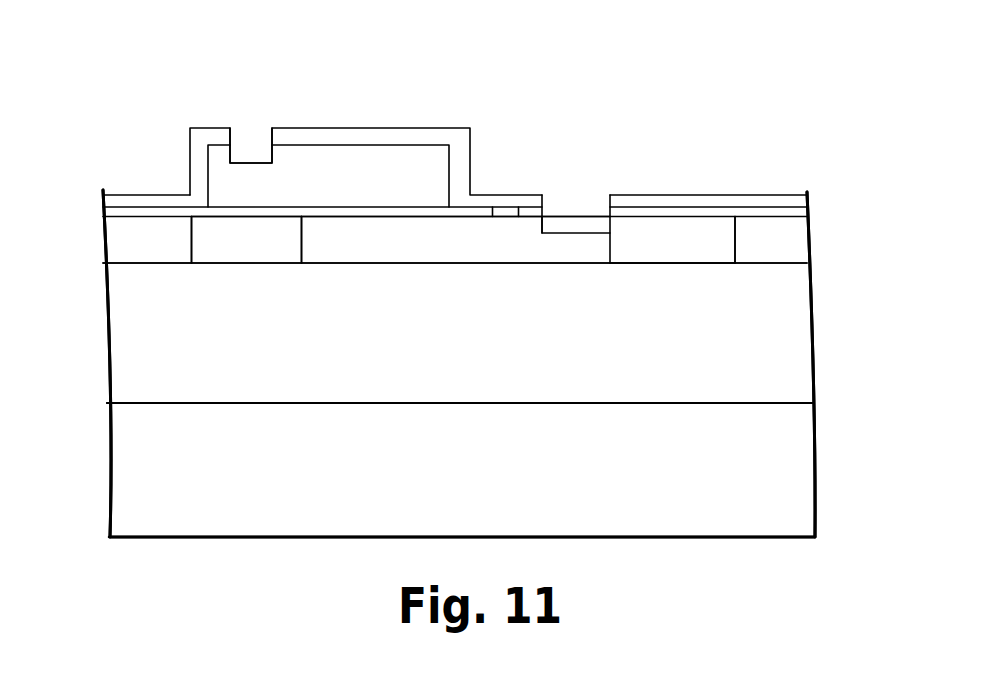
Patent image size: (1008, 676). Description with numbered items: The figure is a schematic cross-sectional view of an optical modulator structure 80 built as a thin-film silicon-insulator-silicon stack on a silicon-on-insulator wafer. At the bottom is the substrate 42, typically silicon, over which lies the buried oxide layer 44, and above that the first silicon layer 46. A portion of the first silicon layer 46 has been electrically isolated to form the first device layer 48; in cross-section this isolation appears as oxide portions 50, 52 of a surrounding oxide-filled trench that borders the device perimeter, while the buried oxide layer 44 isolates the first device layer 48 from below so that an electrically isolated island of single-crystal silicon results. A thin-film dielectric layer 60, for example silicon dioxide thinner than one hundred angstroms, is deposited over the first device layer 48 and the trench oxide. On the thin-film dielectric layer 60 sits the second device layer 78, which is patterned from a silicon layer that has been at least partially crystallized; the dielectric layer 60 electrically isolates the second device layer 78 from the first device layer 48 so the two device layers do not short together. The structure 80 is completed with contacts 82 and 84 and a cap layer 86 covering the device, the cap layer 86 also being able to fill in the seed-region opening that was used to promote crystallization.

The substrate 42 is at (773, 467).
The buried oxide layer 44 is at (762, 330).
The first silicon layer 46 is at (117, 239).
The first device layer 48 is at (362, 232).
The oxide portion 50 is at (230, 237).
The oxide portion 52 is at (665, 238).
The thin-film dielectric layer 60 is at (753, 210).
The second device layer 78 is at (335, 168).
The optical modulator structure 80 is at (592, 93).
The contact 82 is at (577, 225).
The contact 84 is at (247, 155).
The cap layer 86 is at (425, 137).